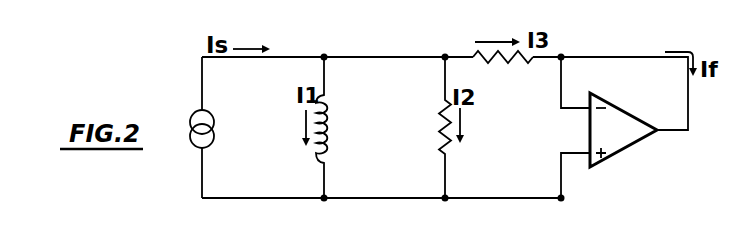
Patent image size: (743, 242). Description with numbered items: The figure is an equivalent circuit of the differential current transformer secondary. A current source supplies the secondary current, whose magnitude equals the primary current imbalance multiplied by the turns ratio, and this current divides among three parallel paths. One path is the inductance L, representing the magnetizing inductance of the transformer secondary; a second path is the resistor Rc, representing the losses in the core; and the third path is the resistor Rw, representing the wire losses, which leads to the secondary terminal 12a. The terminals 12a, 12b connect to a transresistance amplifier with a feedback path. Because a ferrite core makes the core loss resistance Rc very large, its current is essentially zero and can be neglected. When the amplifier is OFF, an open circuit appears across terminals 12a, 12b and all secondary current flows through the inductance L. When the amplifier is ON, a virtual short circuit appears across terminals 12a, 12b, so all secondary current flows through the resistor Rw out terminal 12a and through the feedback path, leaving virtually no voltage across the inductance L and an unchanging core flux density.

The equivalent circuit terminal 12a is at (561, 57).
The equivalent circuit terminal 12b is at (561, 198).
The inductance L is at (333, 127).
The resistor Rc is at (441, 141).
The resistor Rw is at (500, 63).